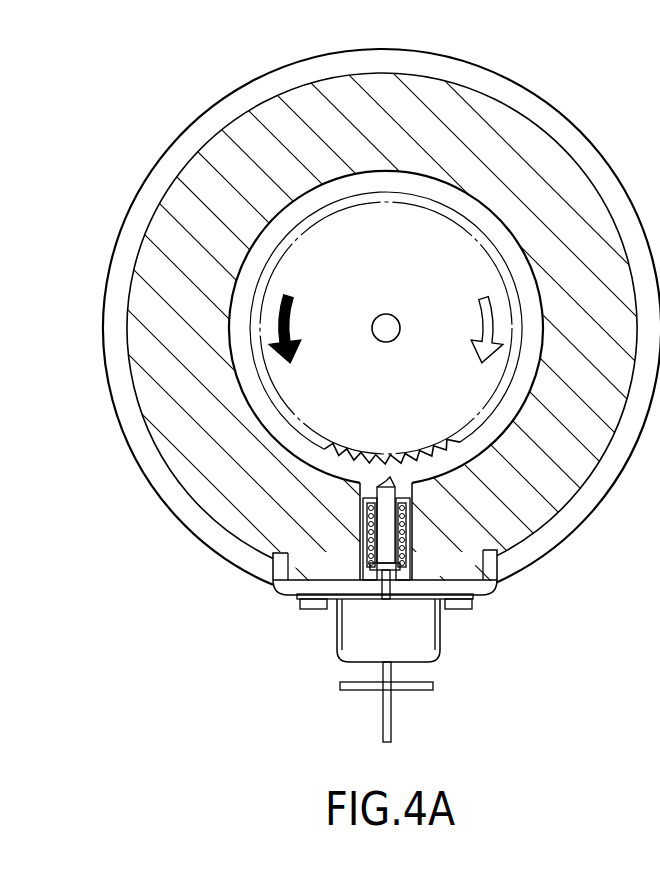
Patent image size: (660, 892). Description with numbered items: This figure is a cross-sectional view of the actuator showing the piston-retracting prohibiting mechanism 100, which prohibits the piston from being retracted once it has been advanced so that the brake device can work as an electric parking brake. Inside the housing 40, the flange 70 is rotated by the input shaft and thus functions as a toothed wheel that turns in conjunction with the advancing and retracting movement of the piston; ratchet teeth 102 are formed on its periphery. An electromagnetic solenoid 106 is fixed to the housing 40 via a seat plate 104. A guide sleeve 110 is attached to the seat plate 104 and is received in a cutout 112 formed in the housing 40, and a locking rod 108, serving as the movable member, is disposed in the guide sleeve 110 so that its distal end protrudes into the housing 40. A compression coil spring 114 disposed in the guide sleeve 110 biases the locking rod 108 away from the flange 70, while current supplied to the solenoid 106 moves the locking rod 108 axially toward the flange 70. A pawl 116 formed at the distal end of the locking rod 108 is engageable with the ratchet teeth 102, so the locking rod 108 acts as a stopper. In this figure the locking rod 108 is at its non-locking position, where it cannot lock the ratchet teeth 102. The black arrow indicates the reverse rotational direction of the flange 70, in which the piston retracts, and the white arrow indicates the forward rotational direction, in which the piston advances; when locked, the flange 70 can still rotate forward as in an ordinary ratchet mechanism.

The housing 40 is at (486, 100).
The flange 70 is at (468, 256).
The piston-retracting prohibiting mechanism 100 is at (328, 627).
The ratchet teeth 102 is at (443, 443).
The seat plate 104 is at (287, 596).
The electromagnetic solenoid 106 is at (342, 658).
The locking rod 108 is at (312, 608).
The guide sleeve 110 is at (411, 550).
The cutout 112 is at (408, 558).
The compression coil spring 114 is at (410, 521).
The pawl 116 is at (396, 486).